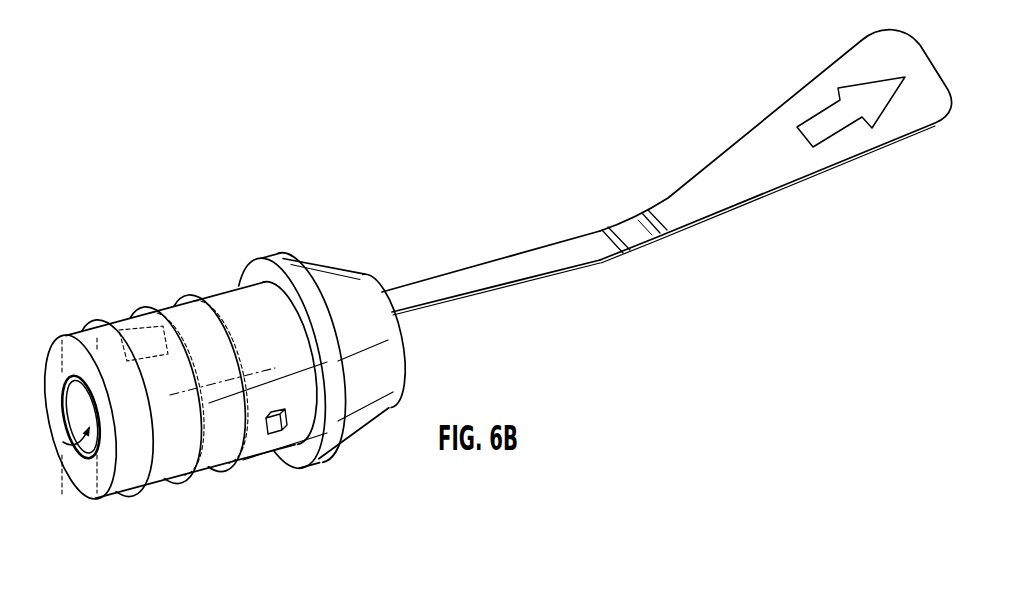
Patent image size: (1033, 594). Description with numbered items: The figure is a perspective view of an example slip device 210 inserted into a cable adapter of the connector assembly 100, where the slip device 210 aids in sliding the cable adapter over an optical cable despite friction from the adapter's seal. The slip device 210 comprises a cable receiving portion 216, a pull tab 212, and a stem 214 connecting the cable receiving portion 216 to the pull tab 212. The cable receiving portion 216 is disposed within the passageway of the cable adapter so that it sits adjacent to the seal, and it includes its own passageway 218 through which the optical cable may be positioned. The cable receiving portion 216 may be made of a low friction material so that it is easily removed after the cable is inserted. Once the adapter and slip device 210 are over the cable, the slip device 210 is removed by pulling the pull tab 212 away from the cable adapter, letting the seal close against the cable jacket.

The connector 100 is at (143, 231).
The slip device 210 is at (667, 181).
The pull tab 212 is at (743, 135).
The stem 214 is at (498, 288).
The cable receiving portion 216 is at (68, 443).
The passageway 218 is at (66, 444).